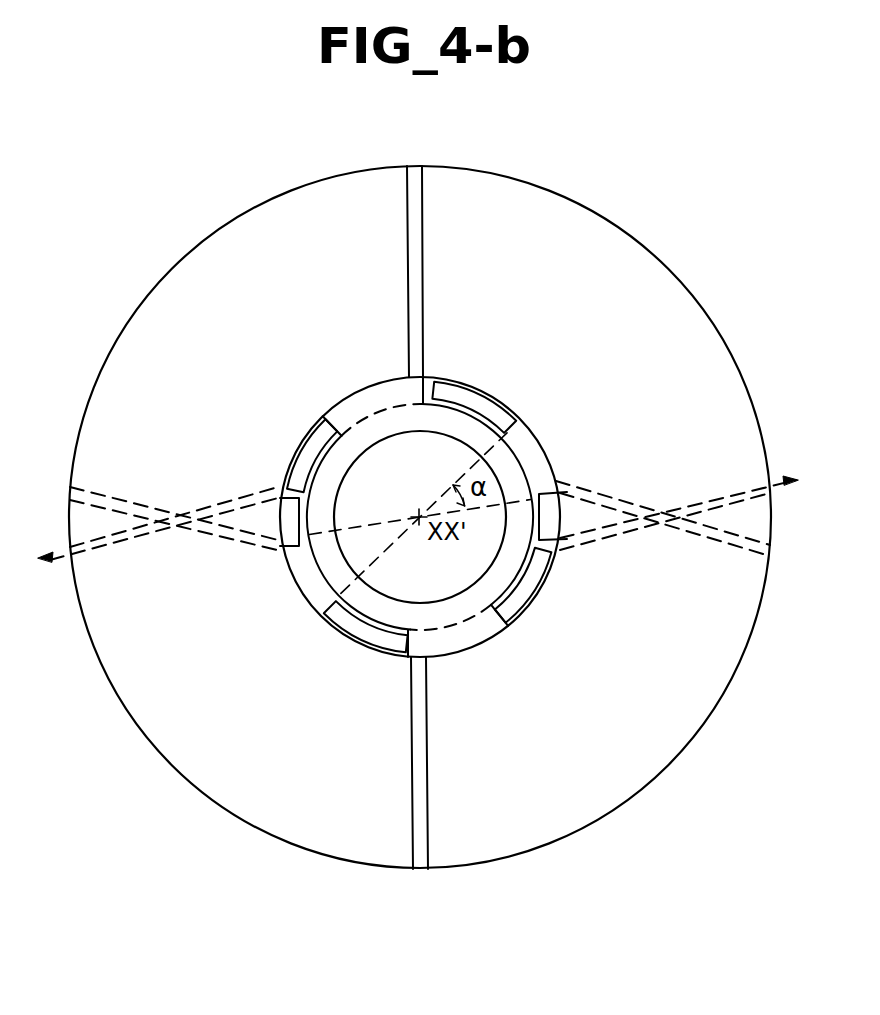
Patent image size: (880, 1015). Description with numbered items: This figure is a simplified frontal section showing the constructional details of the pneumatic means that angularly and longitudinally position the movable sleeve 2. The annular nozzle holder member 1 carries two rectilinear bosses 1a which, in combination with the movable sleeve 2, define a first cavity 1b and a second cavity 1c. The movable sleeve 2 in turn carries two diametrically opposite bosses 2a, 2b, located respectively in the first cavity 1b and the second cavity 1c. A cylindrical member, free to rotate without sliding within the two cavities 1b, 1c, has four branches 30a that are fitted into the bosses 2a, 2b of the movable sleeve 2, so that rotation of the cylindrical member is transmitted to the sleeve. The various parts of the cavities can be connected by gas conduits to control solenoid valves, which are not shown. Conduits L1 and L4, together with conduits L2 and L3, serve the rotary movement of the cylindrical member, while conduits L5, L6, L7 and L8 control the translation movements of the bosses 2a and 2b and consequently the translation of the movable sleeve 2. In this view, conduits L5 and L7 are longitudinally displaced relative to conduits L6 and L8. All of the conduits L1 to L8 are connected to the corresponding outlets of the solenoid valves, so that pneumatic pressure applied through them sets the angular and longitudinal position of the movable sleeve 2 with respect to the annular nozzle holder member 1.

The annular nozzle holder member 1 is at (584, 230).
The rectilinear bosses 1a is at (296, 518).
The first cavity 1b is at (312, 592).
The second cavity 1c is at (518, 454).
The movable sleeve 2 is at (428, 616).
The annular boss 2a is at (454, 638).
The annular boss 2b is at (392, 398).
The branches 30a is at (468, 396).
The conduit L1 is at (610, 536).
The conduit L2 is at (614, 474).
The conduit L3 is at (244, 504).
The conduit L4 is at (252, 542).
The conduit L5 is at (422, 324).
The conduit L6 is at (422, 271).
The conduit L7 is at (426, 698).
The conduit L8 is at (427, 763).